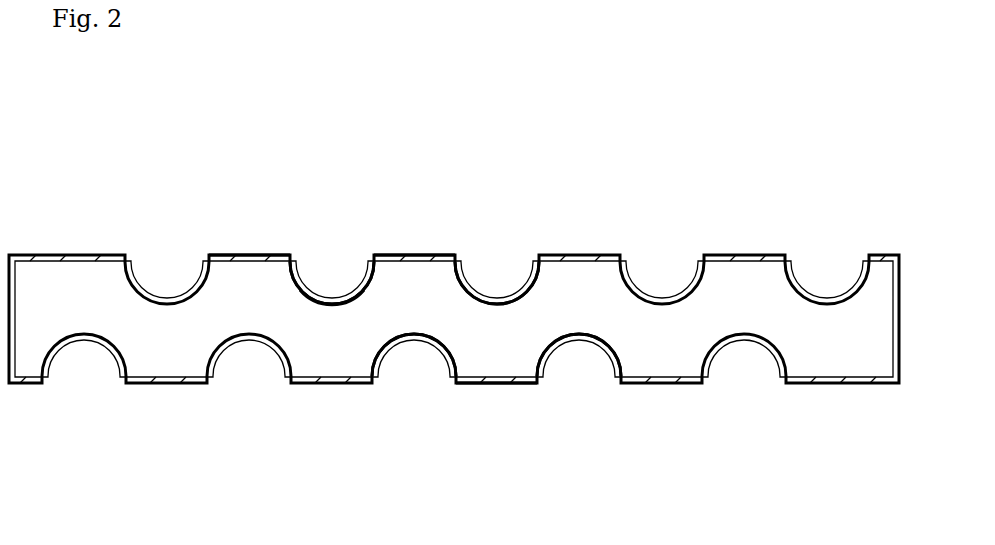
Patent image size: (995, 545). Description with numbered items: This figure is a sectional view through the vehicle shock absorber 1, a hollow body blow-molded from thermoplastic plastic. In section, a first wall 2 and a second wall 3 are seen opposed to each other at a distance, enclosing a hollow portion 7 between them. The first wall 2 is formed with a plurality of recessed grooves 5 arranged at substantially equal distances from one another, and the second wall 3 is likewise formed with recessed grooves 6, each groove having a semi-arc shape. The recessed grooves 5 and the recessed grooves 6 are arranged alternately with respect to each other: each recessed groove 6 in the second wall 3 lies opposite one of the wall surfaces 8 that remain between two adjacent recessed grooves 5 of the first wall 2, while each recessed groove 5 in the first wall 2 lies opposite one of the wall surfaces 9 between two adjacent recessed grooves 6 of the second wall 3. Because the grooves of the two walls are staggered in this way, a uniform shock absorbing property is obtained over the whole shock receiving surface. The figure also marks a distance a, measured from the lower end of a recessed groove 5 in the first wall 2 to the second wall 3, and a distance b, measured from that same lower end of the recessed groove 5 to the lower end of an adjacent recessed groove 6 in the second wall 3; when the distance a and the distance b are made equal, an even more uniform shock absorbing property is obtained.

The vehicle shock absorber 1 is at (574, 211).
The first wall 2 is at (241, 249).
The second wall 3 is at (498, 389).
The recessed grooves 5 is at (329, 287).
The recessed grooves 6 is at (415, 341).
The hollow portion 7 is at (588, 286).
The wall surfaces 8 is at (413, 255).
The wall surfaces 9 is at (332, 383).
The distance a is at (332, 309).
The distance b is at (332, 305).